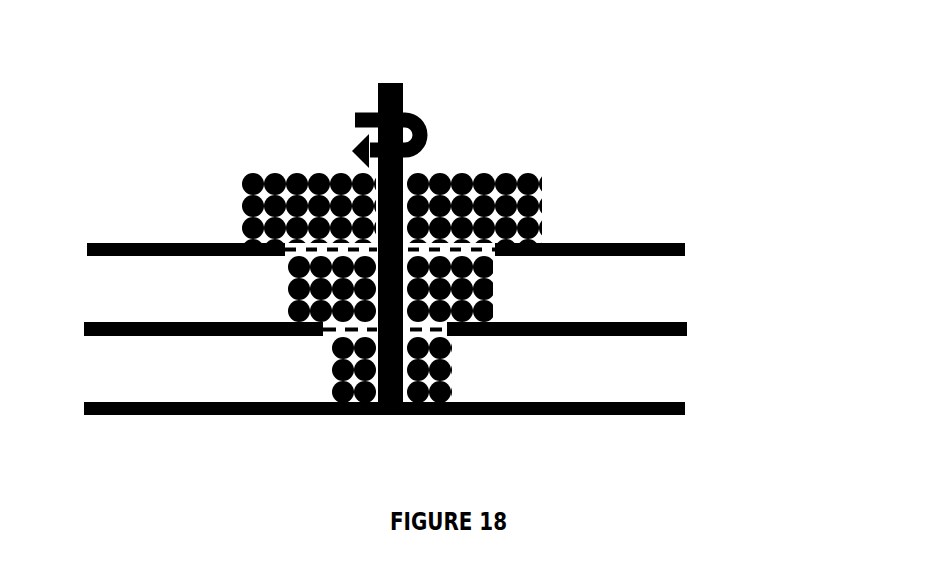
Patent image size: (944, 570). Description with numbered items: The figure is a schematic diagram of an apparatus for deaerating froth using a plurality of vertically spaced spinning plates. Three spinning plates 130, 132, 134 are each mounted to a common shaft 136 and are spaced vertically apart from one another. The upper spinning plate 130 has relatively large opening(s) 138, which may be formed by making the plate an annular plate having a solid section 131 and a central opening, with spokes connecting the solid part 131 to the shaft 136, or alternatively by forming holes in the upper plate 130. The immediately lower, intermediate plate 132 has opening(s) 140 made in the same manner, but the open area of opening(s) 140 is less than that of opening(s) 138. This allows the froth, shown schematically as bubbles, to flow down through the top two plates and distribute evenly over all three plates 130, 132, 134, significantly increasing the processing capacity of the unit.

The upper spinning plate 130 is at (700, 251).
The solid section 131 is at (598, 233).
The intermediate plate 132 is at (698, 328).
The spinning plate 134 is at (697, 413).
The common shaft 136 is at (403, 100).
The opening 138 is at (327, 245).
The opening 140 is at (375, 324).